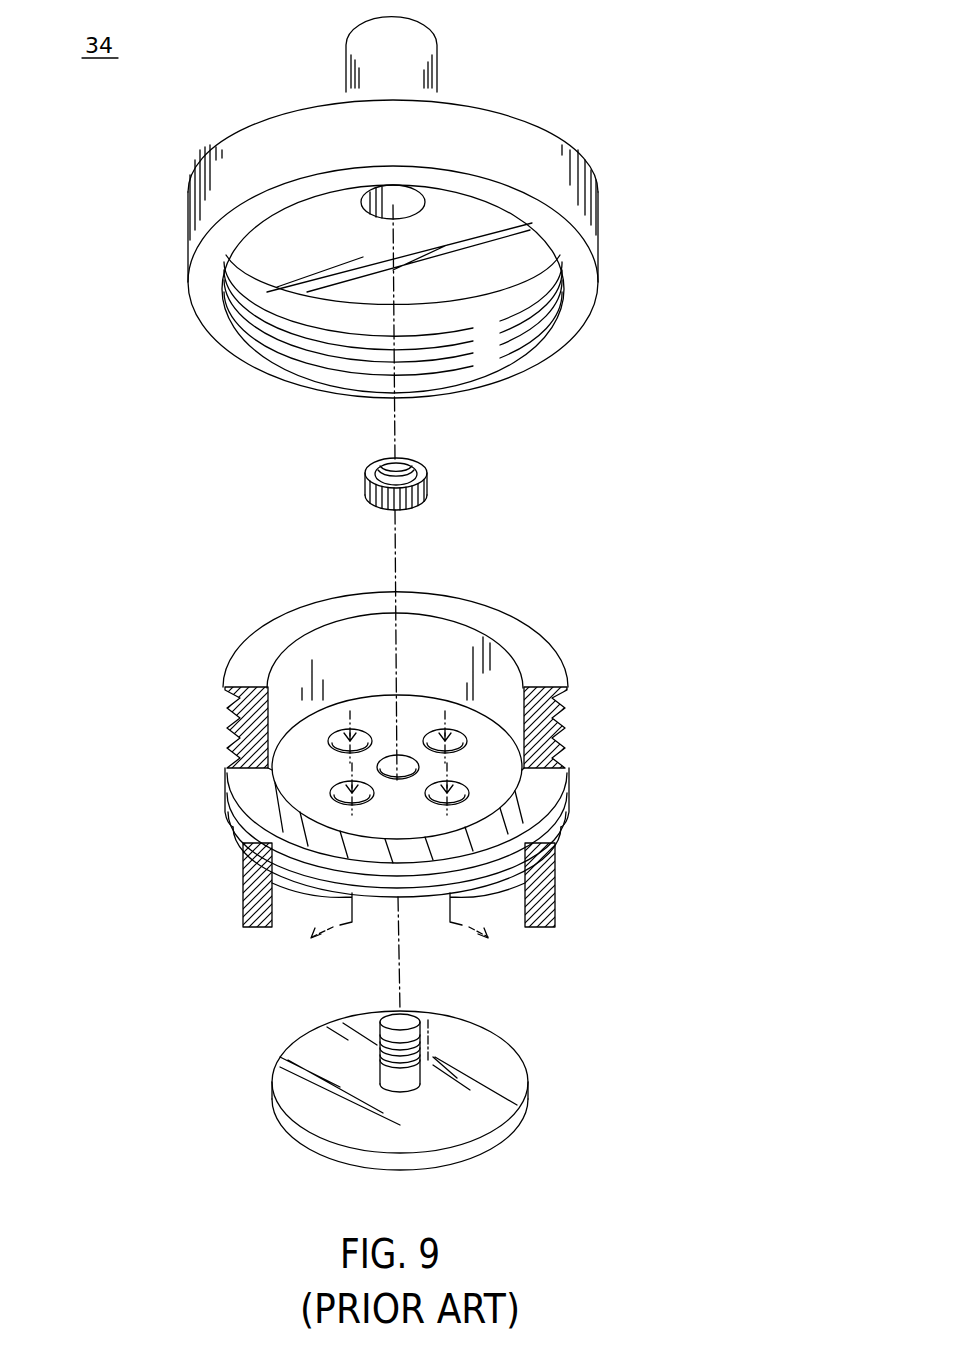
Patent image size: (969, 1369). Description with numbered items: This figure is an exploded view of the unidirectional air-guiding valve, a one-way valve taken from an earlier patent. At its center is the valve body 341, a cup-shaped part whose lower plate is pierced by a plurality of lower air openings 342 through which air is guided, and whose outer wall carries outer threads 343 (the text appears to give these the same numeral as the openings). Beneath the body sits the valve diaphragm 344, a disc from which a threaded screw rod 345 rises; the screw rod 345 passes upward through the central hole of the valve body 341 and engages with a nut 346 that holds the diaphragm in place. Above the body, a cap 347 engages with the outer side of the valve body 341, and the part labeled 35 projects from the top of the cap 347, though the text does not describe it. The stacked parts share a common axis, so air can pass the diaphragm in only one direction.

The connector 35 is at (417, 48).
The valve body 341 is at (498, 628).
The lower air opening 342 is at (340, 792).
The external thread 343 is at (572, 738).
The valve diaphragm 344 is at (510, 1082).
The screw rod 345 is at (427, 1023).
The nut 346 is at (428, 483).
The cap 347 is at (568, 180).